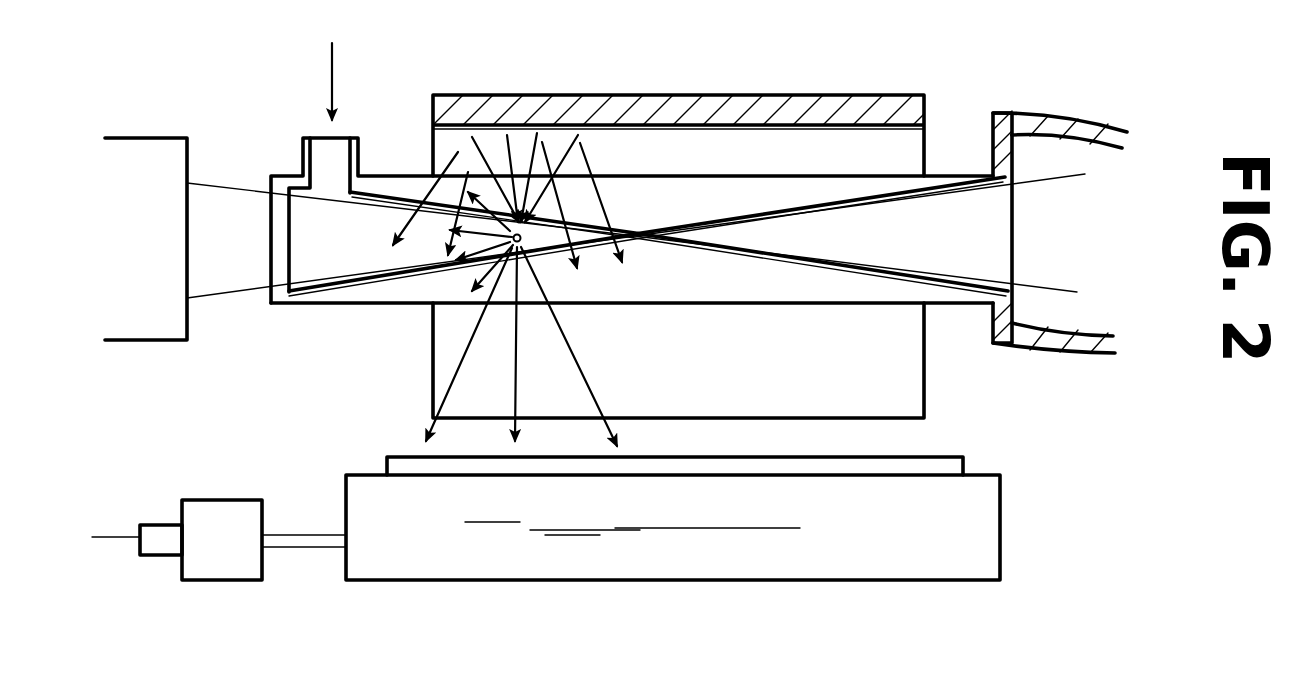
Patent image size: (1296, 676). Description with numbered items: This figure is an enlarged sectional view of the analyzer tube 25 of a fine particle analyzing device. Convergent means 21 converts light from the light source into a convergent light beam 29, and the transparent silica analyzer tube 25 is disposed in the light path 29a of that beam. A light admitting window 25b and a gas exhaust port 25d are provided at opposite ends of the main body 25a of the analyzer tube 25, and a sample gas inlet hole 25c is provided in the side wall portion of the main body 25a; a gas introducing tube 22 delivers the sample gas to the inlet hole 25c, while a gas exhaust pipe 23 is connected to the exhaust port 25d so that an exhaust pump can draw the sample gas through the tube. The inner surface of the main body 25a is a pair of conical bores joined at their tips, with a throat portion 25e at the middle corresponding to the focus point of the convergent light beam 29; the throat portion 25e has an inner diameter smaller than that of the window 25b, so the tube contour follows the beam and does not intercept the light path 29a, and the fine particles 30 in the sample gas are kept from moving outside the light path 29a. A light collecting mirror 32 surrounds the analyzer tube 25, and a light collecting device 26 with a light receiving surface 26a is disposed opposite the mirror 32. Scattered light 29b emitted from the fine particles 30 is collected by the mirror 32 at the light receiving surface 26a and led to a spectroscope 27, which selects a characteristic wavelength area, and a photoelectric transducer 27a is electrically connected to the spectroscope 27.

The convergent means 21 is at (143, 138).
The gas introducing tube 22 is at (334, 62).
The gas exhaust pipe 23 is at (1053, 113).
The analyzer tube 25 is at (292, 177).
The main body 25a is at (334, 305).
The light admitting window 25b is at (266, 228).
The sample gas inlet hole 25c is at (343, 136).
The gas exhaust port 25d is at (1013, 300).
The throat portion 25e is at (642, 230).
The light collecting device 26 is at (1072, 517).
The light receiving surface 26a is at (925, 465).
The spectroscope 27 is at (236, 500).
The photoelectric transducer 27a is at (163, 524).
The convergent light beam 29 is at (217, 298).
The light path 29a is at (253, 293).
The scattered light 29b is at (462, 360).
The fine particles 30 is at (523, 231).
The light collecting mirror 32 is at (681, 95).